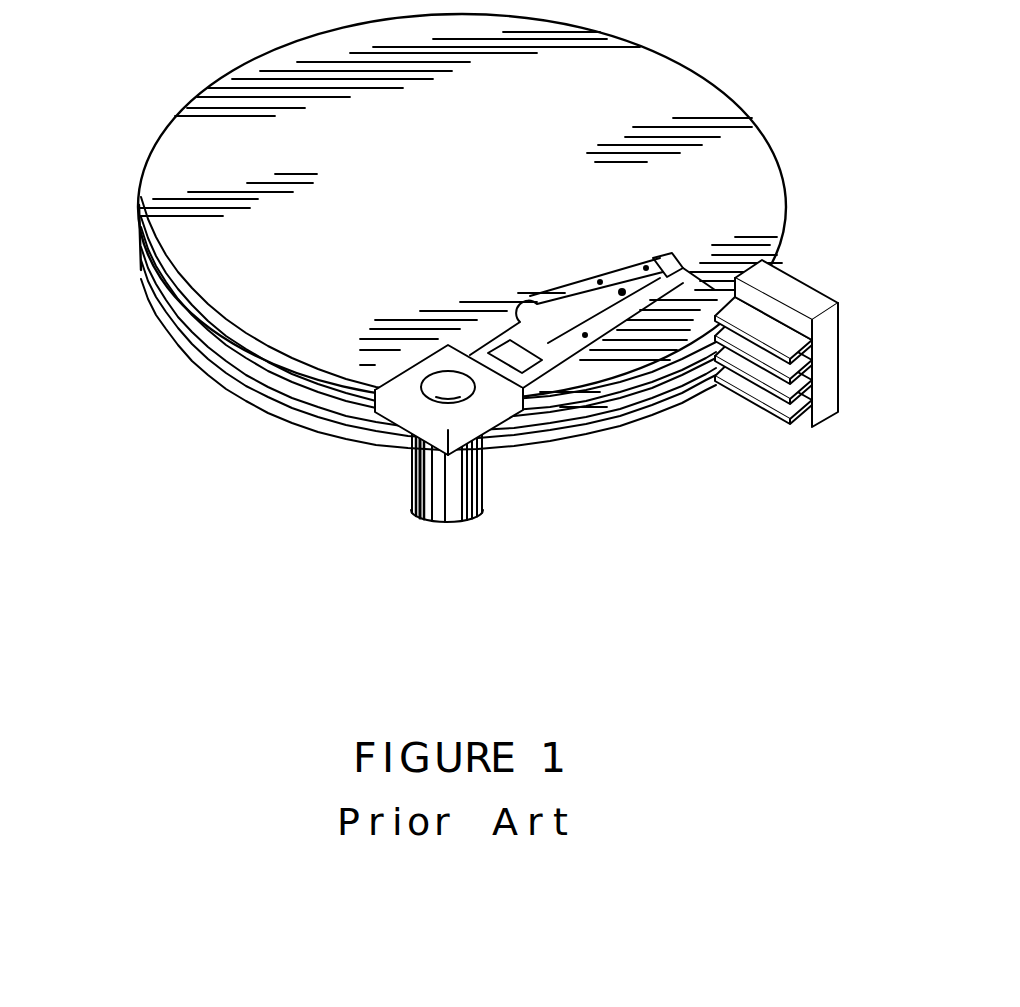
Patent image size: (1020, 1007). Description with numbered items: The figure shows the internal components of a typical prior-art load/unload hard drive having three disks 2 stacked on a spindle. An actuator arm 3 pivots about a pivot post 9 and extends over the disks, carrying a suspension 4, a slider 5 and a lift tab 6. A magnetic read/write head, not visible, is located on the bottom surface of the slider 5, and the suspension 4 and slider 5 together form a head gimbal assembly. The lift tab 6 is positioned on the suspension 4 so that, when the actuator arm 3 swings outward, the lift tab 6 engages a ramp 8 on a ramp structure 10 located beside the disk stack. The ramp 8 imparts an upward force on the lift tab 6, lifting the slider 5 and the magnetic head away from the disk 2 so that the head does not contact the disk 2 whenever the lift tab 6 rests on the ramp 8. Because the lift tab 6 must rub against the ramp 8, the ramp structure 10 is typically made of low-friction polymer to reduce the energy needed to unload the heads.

The disk 2 is at (287, 303).
The actuator arm 3 is at (548, 343).
The suspension 4 is at (583, 303).
The slider 5 is at (658, 280).
The lift tab 6 is at (673, 266).
The ramp 8 is at (723, 300).
The pivot post 9 is at (450, 510).
The ramp structure 10 is at (821, 275).